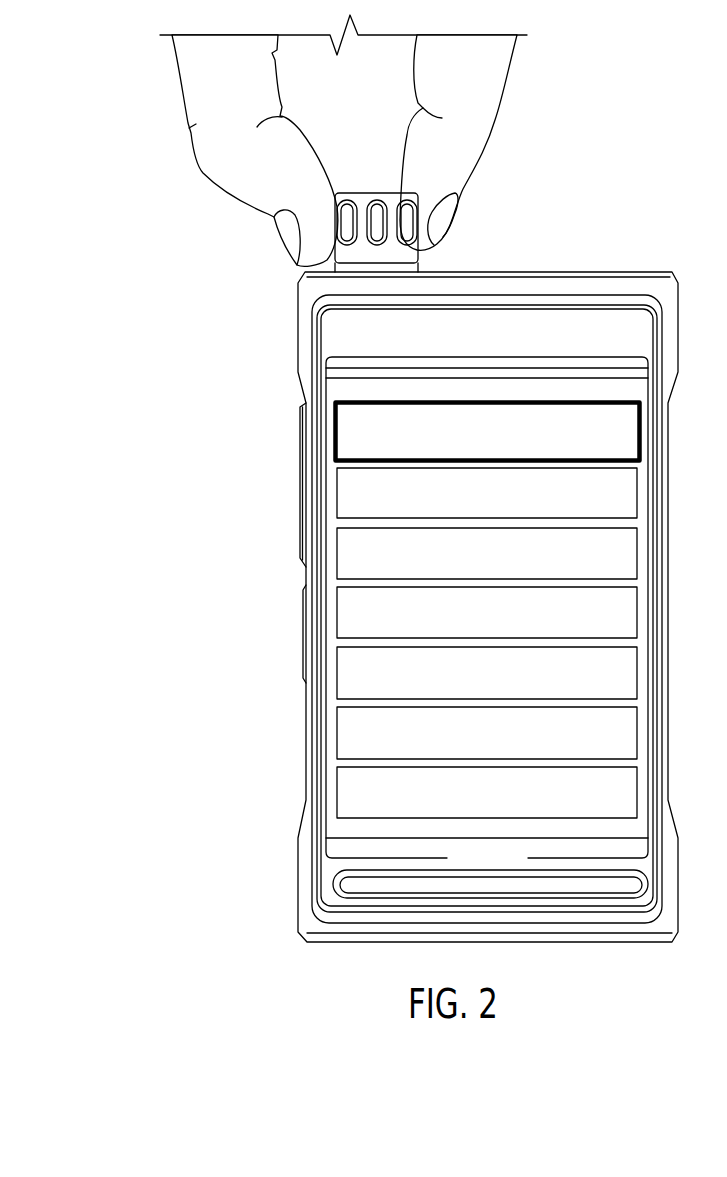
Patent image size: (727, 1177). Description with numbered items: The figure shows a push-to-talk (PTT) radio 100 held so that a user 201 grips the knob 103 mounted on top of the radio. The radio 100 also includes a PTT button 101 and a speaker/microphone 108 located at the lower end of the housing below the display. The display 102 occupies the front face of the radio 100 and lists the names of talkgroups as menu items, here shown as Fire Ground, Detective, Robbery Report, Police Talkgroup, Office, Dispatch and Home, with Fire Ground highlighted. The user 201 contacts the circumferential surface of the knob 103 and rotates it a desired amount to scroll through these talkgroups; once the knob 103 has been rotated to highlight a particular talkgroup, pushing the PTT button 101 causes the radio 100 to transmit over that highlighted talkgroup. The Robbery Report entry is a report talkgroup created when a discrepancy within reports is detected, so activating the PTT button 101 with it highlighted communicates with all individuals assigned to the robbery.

The push-to-talk radio 100 is at (360, 488).
The PTT button 101 is at (302, 505).
The display 102 is at (507, 868).
The knob 103 is at (390, 193).
The speaker/microphone 108 is at (343, 886).
The user 201 is at (507, 81).